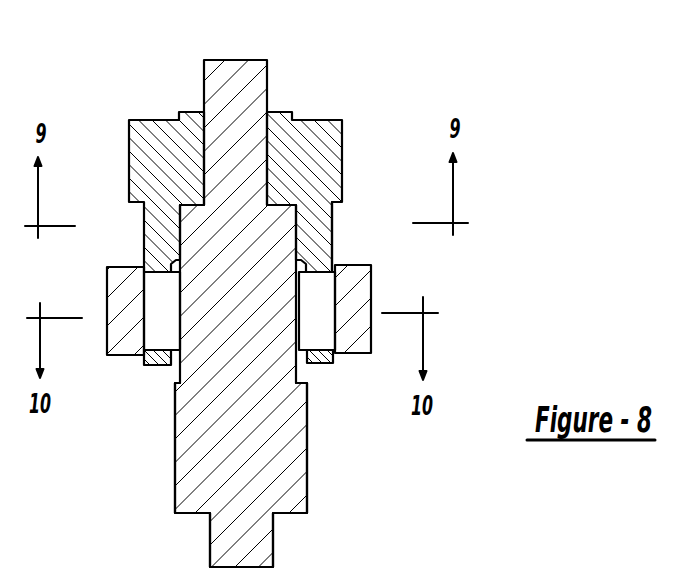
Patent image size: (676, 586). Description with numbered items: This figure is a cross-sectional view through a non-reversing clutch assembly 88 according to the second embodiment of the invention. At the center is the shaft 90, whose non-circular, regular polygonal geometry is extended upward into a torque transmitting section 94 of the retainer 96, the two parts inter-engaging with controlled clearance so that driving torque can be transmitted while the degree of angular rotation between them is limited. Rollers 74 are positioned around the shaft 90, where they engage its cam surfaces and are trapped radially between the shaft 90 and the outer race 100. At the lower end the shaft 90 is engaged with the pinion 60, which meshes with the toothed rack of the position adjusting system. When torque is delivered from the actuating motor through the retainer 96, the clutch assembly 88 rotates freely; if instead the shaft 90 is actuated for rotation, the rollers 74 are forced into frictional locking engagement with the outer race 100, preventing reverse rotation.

The non-reversing clutch assembly 88 is at (362, 70).
The torque transmitting section 94 is at (313, 210).
The retainer 96 is at (333, 257).
The shaft 90 is at (294, 238).
The pinion 60 is at (176, 476).
The rollers 74 is at (162, 336).
The outer race 100 is at (353, 332).